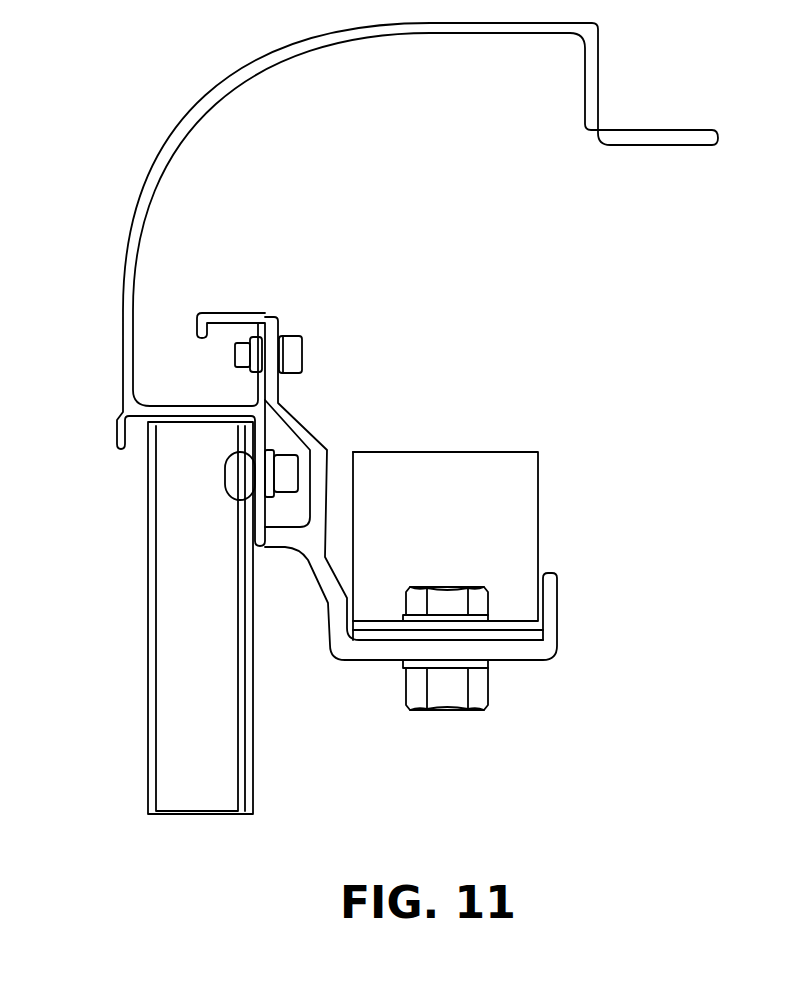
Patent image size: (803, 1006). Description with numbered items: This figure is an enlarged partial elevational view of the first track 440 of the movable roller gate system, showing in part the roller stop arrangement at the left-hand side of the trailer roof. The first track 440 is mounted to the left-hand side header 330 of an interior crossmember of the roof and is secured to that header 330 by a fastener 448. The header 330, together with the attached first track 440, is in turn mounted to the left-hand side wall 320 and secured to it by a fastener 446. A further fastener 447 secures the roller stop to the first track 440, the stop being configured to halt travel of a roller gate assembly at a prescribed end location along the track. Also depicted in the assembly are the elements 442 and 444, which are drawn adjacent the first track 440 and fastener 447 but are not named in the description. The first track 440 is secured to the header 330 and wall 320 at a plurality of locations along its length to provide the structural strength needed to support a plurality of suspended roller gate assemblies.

The left-hand side wall 320 is at (176, 616).
The left-hand side header 330 is at (222, 96).
The first track 440 is at (316, 553).
The channel bracket 442 is at (513, 650).
The rail member 444 is at (520, 483).
The fastener 446 is at (275, 473).
The fastener 447 is at (423, 712).
The fastener 448 is at (292, 352).